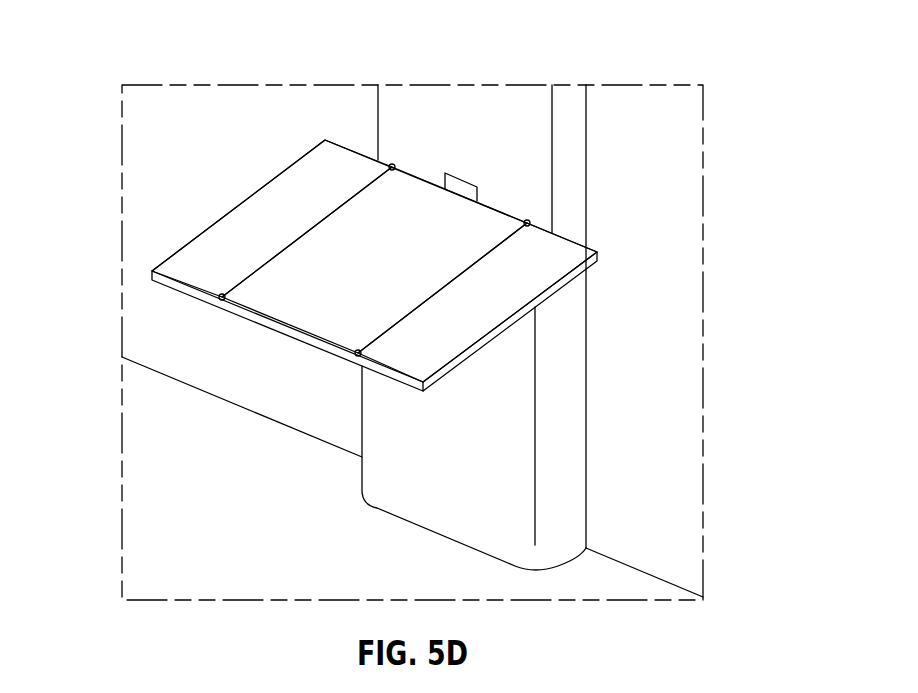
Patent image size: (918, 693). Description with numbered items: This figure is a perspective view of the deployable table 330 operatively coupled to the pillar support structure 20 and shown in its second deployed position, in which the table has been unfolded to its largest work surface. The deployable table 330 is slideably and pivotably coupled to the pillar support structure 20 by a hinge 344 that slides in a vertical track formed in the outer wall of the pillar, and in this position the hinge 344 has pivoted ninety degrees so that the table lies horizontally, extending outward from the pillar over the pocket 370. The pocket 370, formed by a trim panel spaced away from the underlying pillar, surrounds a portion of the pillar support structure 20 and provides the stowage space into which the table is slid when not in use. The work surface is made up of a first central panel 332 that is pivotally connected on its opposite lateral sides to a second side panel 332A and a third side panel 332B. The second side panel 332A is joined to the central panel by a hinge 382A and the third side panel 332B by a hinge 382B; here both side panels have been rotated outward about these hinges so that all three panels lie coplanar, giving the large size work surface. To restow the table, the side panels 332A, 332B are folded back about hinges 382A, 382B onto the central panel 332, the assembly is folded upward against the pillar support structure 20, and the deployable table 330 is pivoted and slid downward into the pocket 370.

The pillar support structure 20 is at (573, 160).
The deployable table 330 is at (250, 172).
The second side panel 332A is at (243, 215).
The first central panel 332 is at (270, 293).
The third side panel 332B is at (558, 263).
The hinge 344 is at (460, 185).
The hinge 382A is at (392, 167).
The hinge 382B is at (527, 223).
The pocket 370 is at (557, 397).